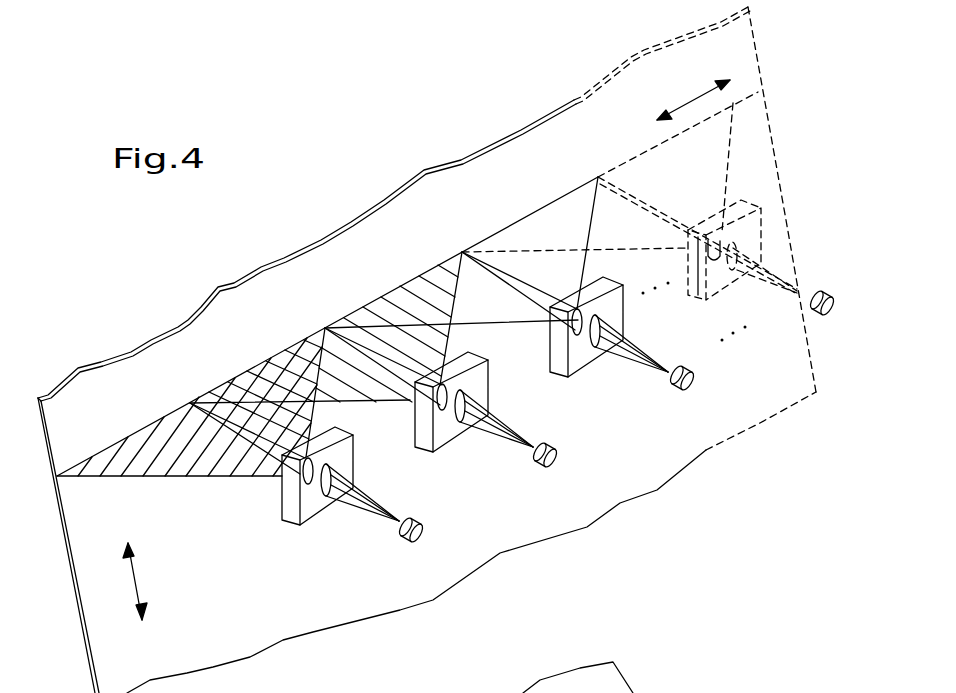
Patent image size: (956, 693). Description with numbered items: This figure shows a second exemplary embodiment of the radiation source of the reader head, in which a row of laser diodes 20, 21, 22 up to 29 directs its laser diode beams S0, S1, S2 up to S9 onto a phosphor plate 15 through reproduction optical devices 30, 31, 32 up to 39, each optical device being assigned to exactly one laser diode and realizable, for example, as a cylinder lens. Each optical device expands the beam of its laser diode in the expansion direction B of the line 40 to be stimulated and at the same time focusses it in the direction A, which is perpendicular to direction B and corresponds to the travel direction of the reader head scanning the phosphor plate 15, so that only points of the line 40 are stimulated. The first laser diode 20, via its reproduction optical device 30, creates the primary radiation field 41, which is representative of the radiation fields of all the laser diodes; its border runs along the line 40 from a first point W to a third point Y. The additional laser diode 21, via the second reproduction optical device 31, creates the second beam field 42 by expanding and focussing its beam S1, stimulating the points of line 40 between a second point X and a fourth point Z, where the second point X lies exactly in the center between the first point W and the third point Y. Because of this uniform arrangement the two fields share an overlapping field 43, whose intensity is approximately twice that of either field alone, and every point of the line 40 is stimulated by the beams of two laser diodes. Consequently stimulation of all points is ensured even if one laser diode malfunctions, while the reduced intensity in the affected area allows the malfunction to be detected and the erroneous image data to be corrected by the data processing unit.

The phosphor plate 15 is at (152, 343).
The line 40 is at (540, 207).
The primary radiation field 41 is at (130, 443).
The second beam field 42 is at (382, 307).
The overlapping field 43 is at (268, 368).
The reproduction optical device 30 is at (282, 510).
The second reproduction optical device 31 is at (447, 440).
The reproduction optical device 32 is at (583, 360).
The reproduction optical device 39 is at (757, 232).
The first laser diode 20 is at (423, 537).
The additional laser diode 21 is at (557, 462).
The laser diode 22 is at (694, 380).
The laser diode 29 is at (830, 313).
The laser diode beam S0 is at (358, 510).
The additional laser diode beam S1 is at (505, 425).
The laser diode beam S2 is at (638, 347).
The laser diode beam S9 is at (785, 273).
The first point W is at (58, 479).
The second point X is at (190, 403).
The third point Y is at (325, 328).
The fourth point Z is at (462, 252).
The travel direction A is at (141, 581).
The expansion direction B is at (693, 95).